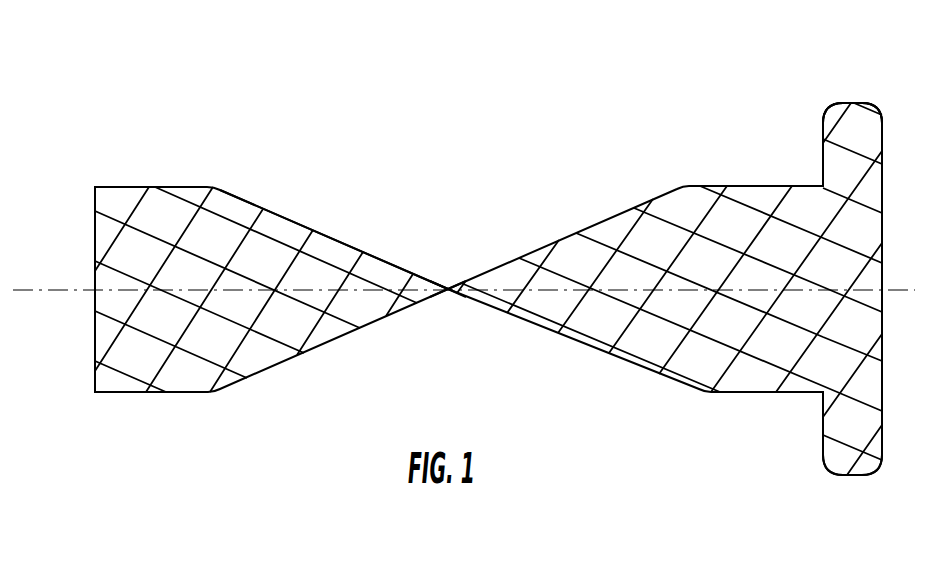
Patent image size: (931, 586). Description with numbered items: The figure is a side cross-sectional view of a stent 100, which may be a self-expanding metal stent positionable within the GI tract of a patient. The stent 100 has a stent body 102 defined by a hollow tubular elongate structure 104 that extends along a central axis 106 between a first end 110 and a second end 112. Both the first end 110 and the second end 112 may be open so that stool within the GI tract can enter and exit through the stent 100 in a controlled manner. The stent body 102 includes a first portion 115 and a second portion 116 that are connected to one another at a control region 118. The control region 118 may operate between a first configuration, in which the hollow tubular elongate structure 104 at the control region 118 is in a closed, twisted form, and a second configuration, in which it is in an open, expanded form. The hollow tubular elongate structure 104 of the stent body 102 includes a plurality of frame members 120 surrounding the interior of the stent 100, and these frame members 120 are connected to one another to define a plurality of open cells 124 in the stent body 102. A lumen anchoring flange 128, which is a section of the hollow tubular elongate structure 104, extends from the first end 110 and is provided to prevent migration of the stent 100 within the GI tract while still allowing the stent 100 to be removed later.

The stent 100 is at (413, 98).
The stent body 102 is at (286, 172).
The hollow tubular elongate structure 104 is at (331, 235).
The central axis 106 is at (42, 289).
The first end 110 is at (884, 494).
The second end 112 is at (105, 418).
The first portion 115 is at (737, 172).
The second portion 116 is at (169, 172).
The control region 118 is at (450, 268).
The frame members 120 is at (568, 276).
The open cells 124 is at (618, 228).
The lumen anchoring flange 128 is at (835, 100).